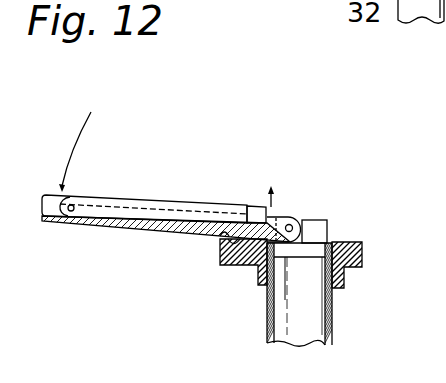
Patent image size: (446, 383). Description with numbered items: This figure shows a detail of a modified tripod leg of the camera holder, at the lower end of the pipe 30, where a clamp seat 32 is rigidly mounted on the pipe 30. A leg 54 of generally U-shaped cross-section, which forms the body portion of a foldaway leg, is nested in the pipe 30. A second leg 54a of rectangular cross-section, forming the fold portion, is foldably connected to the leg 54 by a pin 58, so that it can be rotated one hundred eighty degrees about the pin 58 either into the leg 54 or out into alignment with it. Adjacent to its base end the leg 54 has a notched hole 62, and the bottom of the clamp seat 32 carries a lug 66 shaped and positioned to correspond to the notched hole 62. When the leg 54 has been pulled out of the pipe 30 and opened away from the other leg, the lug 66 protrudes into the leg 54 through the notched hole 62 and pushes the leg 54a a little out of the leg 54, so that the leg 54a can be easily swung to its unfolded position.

The pipe 30 is at (336, 318).
The clamp seat 32 is at (234, 262).
The leg 54 is at (130, 231).
The leg 54a is at (210, 201).
The pin 58 is at (68, 218).
The notched hole 62 is at (221, 238).
The lug 66 is at (244, 203).